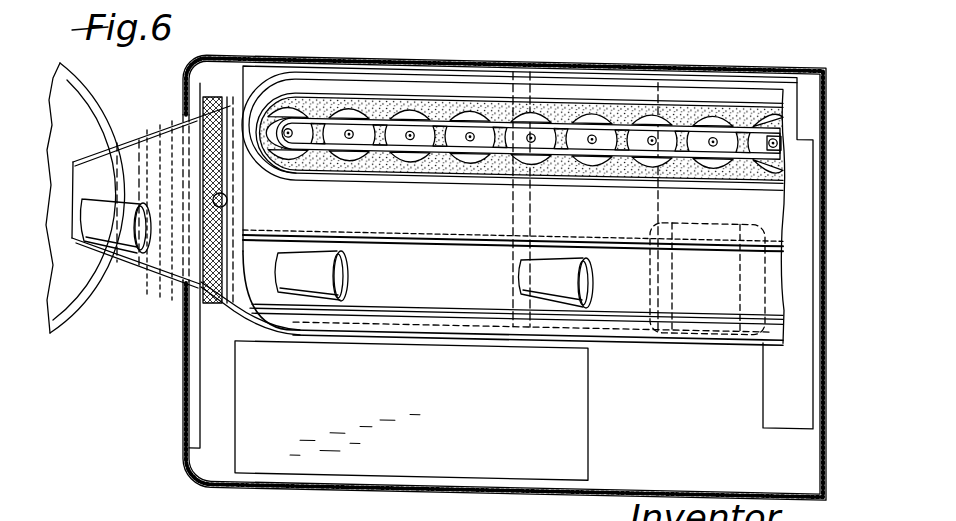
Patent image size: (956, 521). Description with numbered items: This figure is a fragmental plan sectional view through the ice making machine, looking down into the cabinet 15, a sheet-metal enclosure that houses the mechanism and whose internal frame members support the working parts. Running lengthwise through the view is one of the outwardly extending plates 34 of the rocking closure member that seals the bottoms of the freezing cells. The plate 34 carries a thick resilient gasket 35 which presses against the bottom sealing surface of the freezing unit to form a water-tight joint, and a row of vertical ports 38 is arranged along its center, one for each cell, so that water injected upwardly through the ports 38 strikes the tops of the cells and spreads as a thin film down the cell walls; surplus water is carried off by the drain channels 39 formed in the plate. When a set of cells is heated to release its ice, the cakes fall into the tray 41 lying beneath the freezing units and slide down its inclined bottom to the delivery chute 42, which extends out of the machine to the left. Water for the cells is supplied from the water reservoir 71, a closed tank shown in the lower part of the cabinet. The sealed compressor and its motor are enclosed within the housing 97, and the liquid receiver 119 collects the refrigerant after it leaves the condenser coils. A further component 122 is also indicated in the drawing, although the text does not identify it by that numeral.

The cabinet 15 is at (623, 63).
The housing 97 is at (253, 71).
The plate 34 is at (418, 92).
The resilient gasket 35 is at (440, 163).
The vertical ports 38 is at (291, 136).
The drain channels 39 is at (684, 160).
The tray 41 is at (633, 342).
The delivery chute 42 is at (152, 136).
The water reservoir 71 is at (500, 403).
The liquid receiver 119 is at (520, 223).
The lamp (phantom) 122 is at (655, 221).